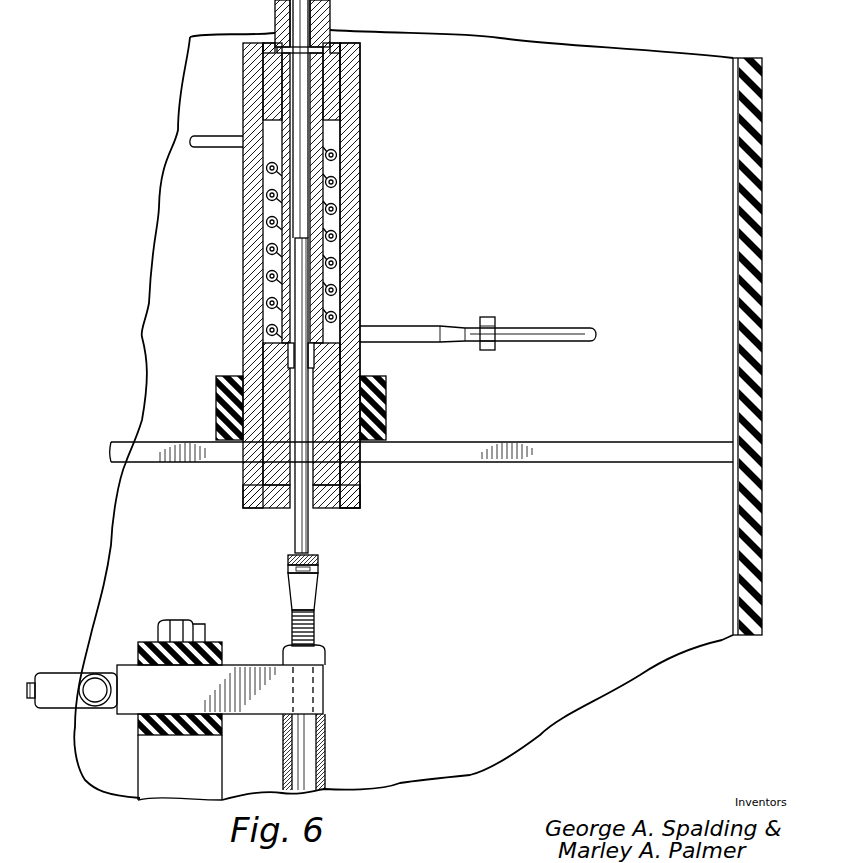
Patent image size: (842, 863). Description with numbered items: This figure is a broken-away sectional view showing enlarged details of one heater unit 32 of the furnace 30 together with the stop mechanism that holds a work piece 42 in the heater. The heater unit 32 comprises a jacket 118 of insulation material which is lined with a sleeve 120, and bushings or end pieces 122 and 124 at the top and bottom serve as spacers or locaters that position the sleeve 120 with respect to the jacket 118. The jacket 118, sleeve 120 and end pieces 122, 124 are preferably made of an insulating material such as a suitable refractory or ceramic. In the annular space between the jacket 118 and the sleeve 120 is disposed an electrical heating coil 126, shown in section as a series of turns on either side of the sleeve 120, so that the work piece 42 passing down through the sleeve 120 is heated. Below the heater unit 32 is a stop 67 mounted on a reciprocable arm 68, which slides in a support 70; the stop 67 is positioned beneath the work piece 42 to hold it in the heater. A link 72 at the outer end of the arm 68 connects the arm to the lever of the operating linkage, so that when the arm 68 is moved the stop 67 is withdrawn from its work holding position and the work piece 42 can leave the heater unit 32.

The furnace 30 is at (764, 69).
The heater unit 32 is at (329, 17).
The work piece 42 is at (298, 346).
The stop 67 is at (312, 597).
The reciprocable arm 68 is at (300, 679).
The support 70 is at (156, 755).
The link 72 is at (32, 684).
The jacket 118 is at (352, 144).
The sleeve 120 is at (321, 130).
The end piece 122 is at (358, 52).
The end piece 124 is at (358, 497).
The electrical heating coil 126 is at (337, 211).